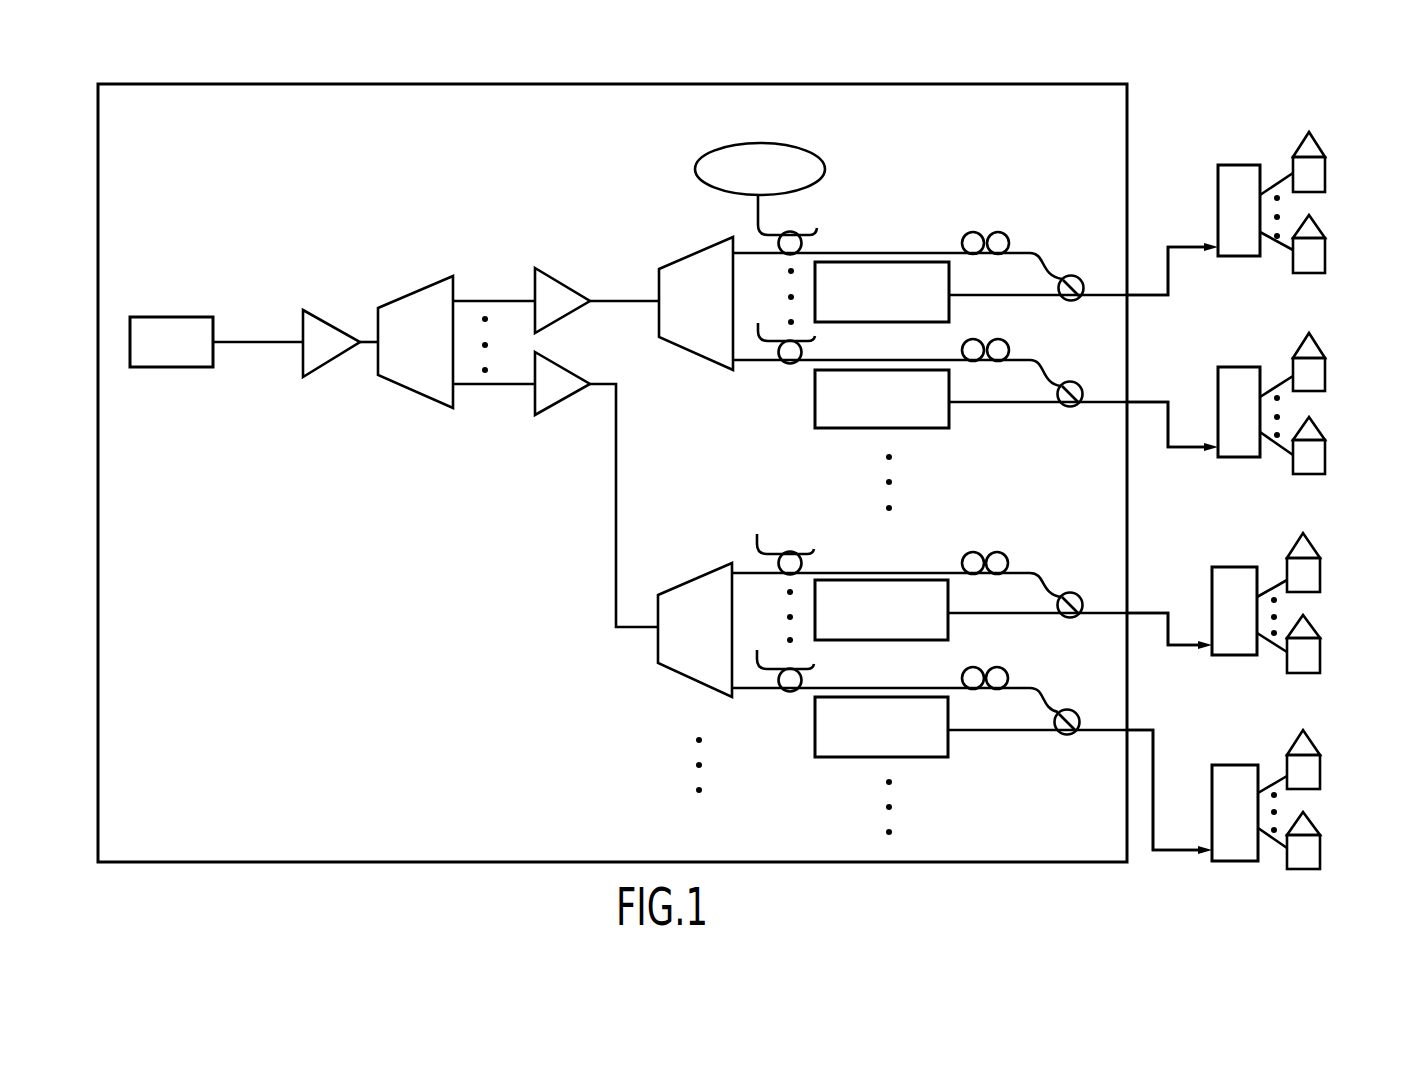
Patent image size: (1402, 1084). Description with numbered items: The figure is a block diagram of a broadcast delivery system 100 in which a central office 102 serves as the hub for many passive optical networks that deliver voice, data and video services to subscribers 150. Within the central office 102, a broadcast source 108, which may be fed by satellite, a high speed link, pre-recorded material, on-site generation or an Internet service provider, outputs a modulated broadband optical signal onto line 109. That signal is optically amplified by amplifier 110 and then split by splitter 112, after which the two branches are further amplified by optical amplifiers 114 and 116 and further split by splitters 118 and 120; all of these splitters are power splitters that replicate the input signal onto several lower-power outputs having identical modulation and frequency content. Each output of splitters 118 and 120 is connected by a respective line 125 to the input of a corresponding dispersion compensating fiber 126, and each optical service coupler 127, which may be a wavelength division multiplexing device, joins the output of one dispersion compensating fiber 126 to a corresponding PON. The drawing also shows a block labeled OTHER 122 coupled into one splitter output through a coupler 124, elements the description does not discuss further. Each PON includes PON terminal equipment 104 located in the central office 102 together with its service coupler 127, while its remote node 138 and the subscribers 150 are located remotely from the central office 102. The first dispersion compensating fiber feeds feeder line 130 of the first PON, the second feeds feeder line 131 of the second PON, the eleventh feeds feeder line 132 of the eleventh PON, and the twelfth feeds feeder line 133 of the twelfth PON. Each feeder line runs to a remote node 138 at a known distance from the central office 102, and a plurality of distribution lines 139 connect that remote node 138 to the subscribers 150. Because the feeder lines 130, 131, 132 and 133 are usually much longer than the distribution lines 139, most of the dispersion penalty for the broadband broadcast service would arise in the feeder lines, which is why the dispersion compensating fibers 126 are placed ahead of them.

The broadcast delivery system 100 is at (117, 913).
The central office 102 is at (185, 862).
The PON terminal equipment 104 is at (865, 262).
The broadcast source 108 is at (185, 317).
The line 109 is at (253, 342).
The amplifier 110 is at (305, 370).
The splitter 112 is at (415, 391).
The optical amplifier 114 is at (558, 282).
The optical amplifier 116 is at (540, 411).
The splitter 118 is at (700, 355).
The splitter 120 is at (700, 682).
The other signal source 122 is at (757, 143).
The optical coupler 124 is at (797, 232).
The line 125 is at (917, 253).
The dispersion compensating fiber 126 is at (1010, 240).
The optical service coupler 127 is at (1071, 276).
The feeder line 130 is at (1185, 245).
The feeder line 131 is at (1185, 445).
The feeder line 132 is at (1182, 643).
The feeder line 133 is at (1153, 818).
The remote node 138 is at (1240, 165).
The distribution lines 139 is at (1279, 181).
The subscribers 150 is at (1325, 172).